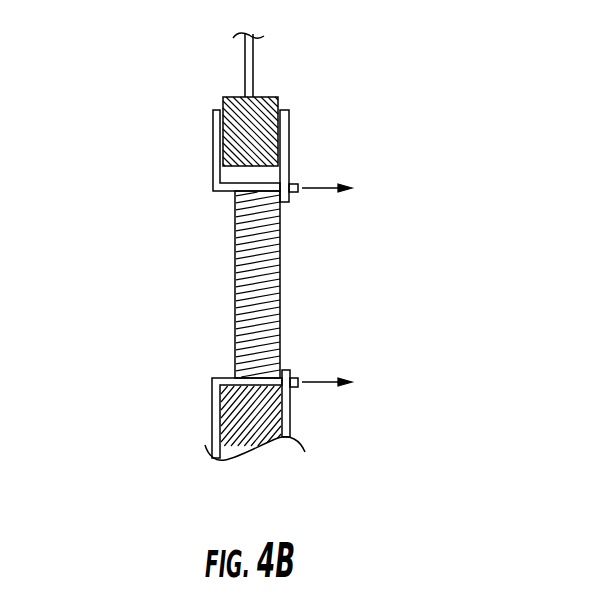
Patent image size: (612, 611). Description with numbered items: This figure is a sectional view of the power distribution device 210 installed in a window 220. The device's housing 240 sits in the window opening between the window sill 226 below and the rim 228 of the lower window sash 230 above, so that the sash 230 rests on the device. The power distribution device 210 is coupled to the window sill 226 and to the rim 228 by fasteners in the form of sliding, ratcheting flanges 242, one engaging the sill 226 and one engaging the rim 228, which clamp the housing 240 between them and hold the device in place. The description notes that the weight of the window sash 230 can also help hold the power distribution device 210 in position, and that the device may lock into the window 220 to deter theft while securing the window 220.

The window 220 is at (288, 67).
The lower window sash 230 is at (245, 66).
The rim 228 is at (242, 138).
The sliding, ratcheting flanges 242 is at (210, 183).
The housing 240 is at (276, 242).
The power distribution device 210 is at (204, 327).
The window sill 226 is at (248, 428).